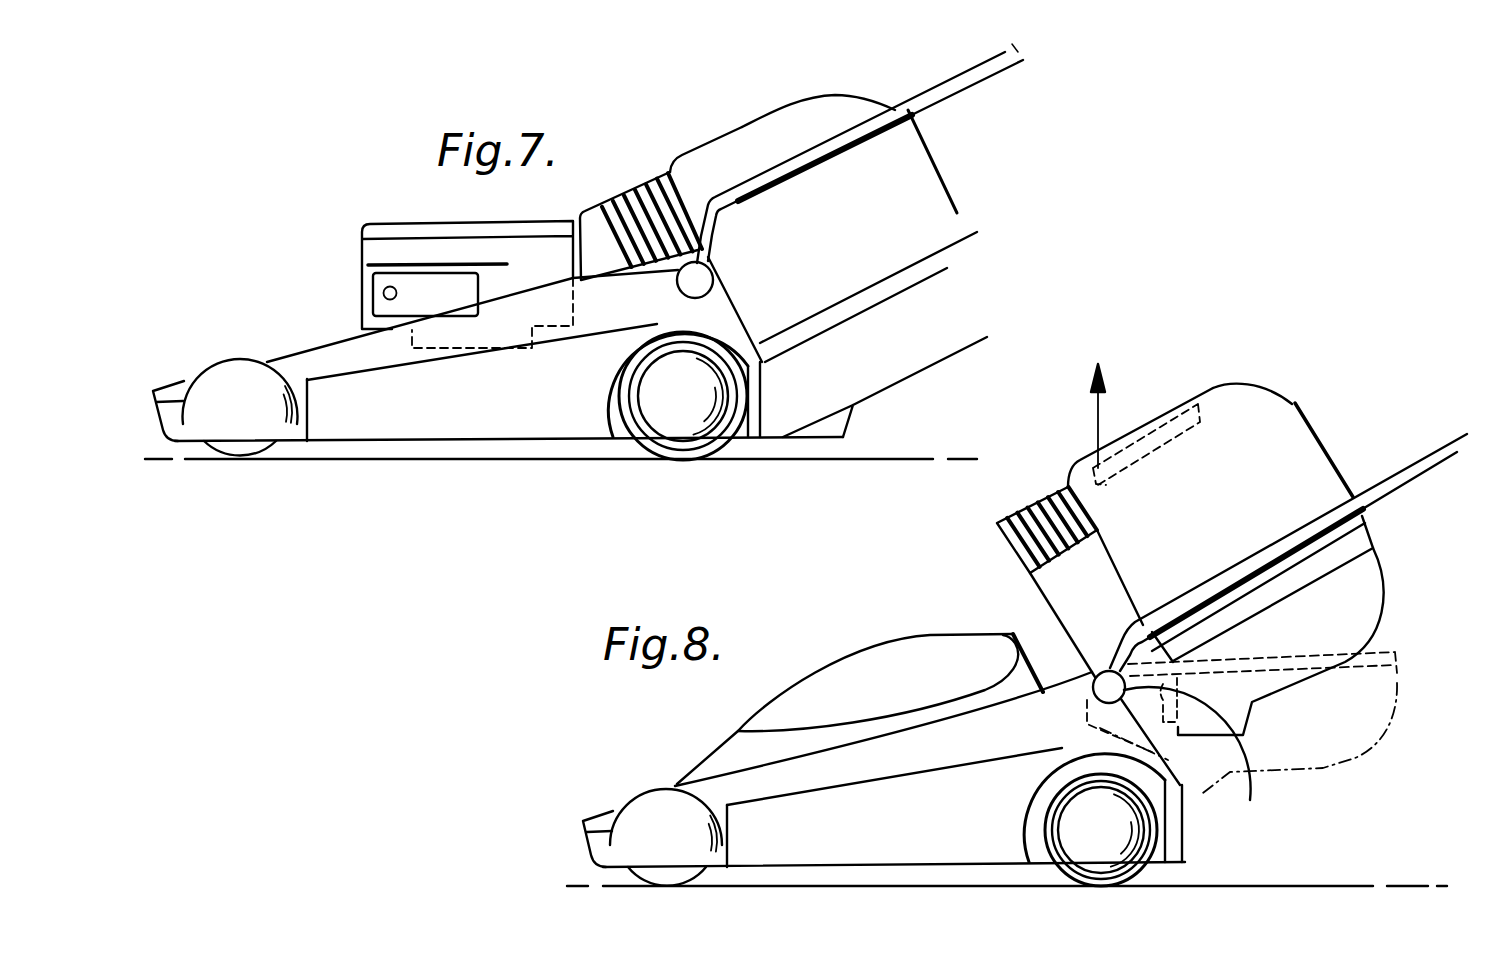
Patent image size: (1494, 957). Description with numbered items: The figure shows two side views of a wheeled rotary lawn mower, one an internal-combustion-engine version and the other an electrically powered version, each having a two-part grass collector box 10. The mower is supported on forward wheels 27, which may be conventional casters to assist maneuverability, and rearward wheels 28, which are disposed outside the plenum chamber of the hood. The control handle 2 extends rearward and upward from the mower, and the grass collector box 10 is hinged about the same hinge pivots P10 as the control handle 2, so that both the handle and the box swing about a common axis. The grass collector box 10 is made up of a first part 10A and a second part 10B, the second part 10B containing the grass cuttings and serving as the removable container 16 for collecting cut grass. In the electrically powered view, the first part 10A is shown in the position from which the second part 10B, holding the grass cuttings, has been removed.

In FIG. 7, the handle 2 is at (990, 63).
In FIG. 8, the handle 2 is at (1420, 474).
In FIG. 7, the removable container 16 is at (952, 176).
In FIG. 7, the hinge pivots P10 is at (713, 281).
In FIG. 8, the hinge pivots P10 is at (1124, 691).
In FIG. 7, the front wheels 27 is at (256, 457).
In FIG. 8, the front wheels 27 is at (648, 888).
In FIG. 7, the rear wheels 28 is at (688, 461).
In FIG. 8, the rear wheels 28 is at (1095, 887).
In FIG. 8, the grass box 10 is at (1362, 470).
In FIG. 8, the first part of grass collector box 10A is at (1365, 722).
In FIG. 8, the second part of grass collector box 10B is at (1297, 445).